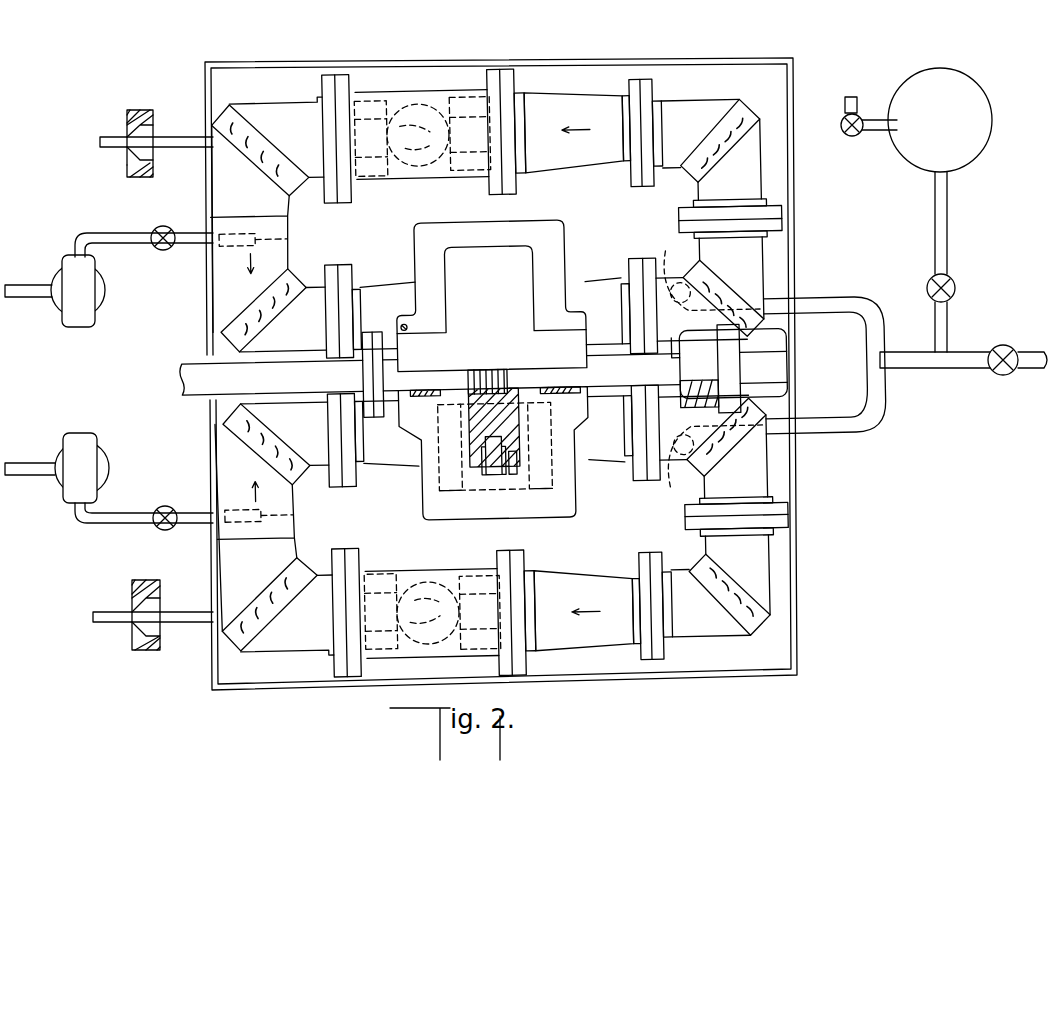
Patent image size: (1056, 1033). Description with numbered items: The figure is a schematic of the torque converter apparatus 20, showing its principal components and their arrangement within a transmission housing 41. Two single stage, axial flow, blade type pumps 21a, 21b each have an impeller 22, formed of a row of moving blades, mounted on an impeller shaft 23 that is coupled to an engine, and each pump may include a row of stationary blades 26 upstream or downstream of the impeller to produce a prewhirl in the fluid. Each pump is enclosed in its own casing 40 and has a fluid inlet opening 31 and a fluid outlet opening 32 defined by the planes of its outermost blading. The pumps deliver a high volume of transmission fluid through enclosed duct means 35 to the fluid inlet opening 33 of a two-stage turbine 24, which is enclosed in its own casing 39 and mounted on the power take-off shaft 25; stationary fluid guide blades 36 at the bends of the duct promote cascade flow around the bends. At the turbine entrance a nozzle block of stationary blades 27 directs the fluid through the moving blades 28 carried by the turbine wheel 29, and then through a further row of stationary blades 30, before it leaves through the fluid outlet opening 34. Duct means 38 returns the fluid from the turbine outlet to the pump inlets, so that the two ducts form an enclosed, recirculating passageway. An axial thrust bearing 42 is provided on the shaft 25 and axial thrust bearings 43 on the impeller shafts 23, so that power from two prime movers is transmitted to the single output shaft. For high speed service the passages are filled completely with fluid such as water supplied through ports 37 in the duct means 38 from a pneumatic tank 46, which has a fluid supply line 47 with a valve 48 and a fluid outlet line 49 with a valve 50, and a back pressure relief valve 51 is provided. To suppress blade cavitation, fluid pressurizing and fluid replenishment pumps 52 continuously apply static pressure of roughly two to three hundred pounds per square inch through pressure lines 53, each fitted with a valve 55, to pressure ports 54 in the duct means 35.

The torque converter apparatus 20 is at (809, 533).
The pump 21a is at (398, 658).
The pump 21b is at (420, 94).
The impeller 22 is at (410, 162).
The impeller shaft 23 is at (285, 135).
The turbine 24 is at (574, 489).
The power take-off shaft 25 is at (197, 393).
The stationary blades 26 is at (372, 102).
The stationary blades 27 is at (476, 478).
The moving blades 28 is at (497, 480).
The turbine wheel 29 is at (512, 418).
The stationary blades 30 is at (512, 480).
The fluid inlet opening 31 is at (527, 100).
The fluid outlet opening 32 is at (326, 100).
The fluid inlet opening 33 is at (413, 470).
The fluid outlet opening 34 is at (600, 464).
The duct means 35 is at (230, 296).
The stationary fluid guide blades 36 is at (218, 338).
The ports 37 is at (676, 268).
The duct means 38 is at (752, 170).
The casing 39 is at (560, 513).
The casing 40 is at (455, 98).
The transmission housing 41 is at (673, 64).
The axial thrust bearing 42 is at (762, 378).
The axial thrust bearing 43 is at (140, 110).
The pneumatic tank 46 is at (976, 100).
The fluid supply line 47 is at (873, 120).
The valve 48 is at (841, 125).
The fluid outlet line 49 is at (947, 230).
The valve 50 is at (956, 287).
The back pressure relief valve 51 is at (1000, 374).
The fluid pressurizing and fluid replenishment pump 52 is at (68, 318).
The pressure line 53 is at (144, 242).
The pressure port 54 is at (278, 238).
The valve 55 is at (170, 227).